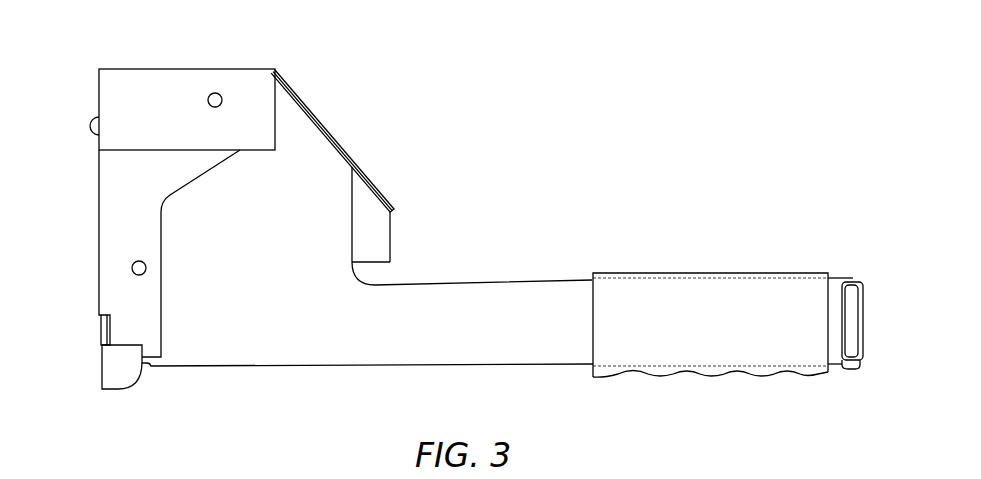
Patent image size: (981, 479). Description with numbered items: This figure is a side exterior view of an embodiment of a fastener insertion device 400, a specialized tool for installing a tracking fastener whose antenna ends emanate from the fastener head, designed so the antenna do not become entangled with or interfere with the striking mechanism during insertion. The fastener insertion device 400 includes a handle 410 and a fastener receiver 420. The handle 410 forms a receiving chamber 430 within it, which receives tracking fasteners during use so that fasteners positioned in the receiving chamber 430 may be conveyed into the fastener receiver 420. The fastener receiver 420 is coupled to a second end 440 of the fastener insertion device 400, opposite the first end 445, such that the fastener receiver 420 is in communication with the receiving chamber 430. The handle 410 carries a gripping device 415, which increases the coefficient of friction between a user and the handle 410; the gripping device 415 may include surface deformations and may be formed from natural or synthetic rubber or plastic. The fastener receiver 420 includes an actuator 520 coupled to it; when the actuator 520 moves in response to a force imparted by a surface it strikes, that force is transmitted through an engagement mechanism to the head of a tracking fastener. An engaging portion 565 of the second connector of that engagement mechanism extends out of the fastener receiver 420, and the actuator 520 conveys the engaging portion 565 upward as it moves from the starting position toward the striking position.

The fastener insertion device 400 is at (655, 97).
The handle 410 is at (727, 273).
The gripping device 415 is at (712, 377).
The fastener receiver 420 is at (176, 69).
The receiving chamber 430 is at (503, 282).
The second end 440 is at (98, 300).
The first end 445 is at (860, 320).
The actuator 520 is at (118, 389).
The engaging portion 565 is at (90, 125).